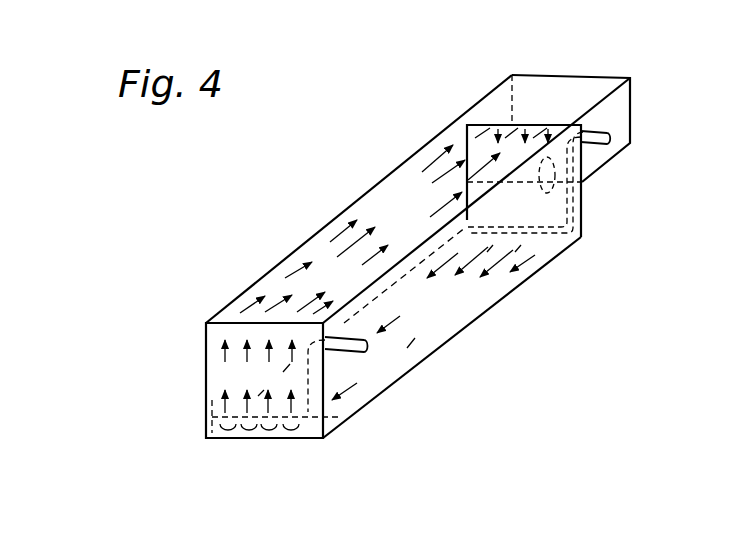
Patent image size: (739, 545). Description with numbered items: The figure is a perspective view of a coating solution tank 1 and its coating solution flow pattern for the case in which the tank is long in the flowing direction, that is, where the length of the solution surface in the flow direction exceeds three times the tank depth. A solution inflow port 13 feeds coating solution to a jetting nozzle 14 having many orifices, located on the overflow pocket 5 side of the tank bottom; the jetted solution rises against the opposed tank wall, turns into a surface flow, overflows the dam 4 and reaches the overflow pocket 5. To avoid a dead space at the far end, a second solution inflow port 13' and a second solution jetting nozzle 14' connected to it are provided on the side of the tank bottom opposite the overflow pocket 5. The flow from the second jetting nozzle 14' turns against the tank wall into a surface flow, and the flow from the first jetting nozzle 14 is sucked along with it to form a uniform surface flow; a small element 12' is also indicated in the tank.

The coating solution tank 1 is at (207, 378).
The dam 4 is at (480, 125).
The overflow pocket 5 is at (576, 93).
The sensor element 12' is at (527, 191).
The solution inflow port 13 is at (627, 121).
The second solution inflow port 13' is at (382, 373).
The jetting nozzle 14 is at (552, 182).
The second solution jetting nozzle 14' is at (295, 401).